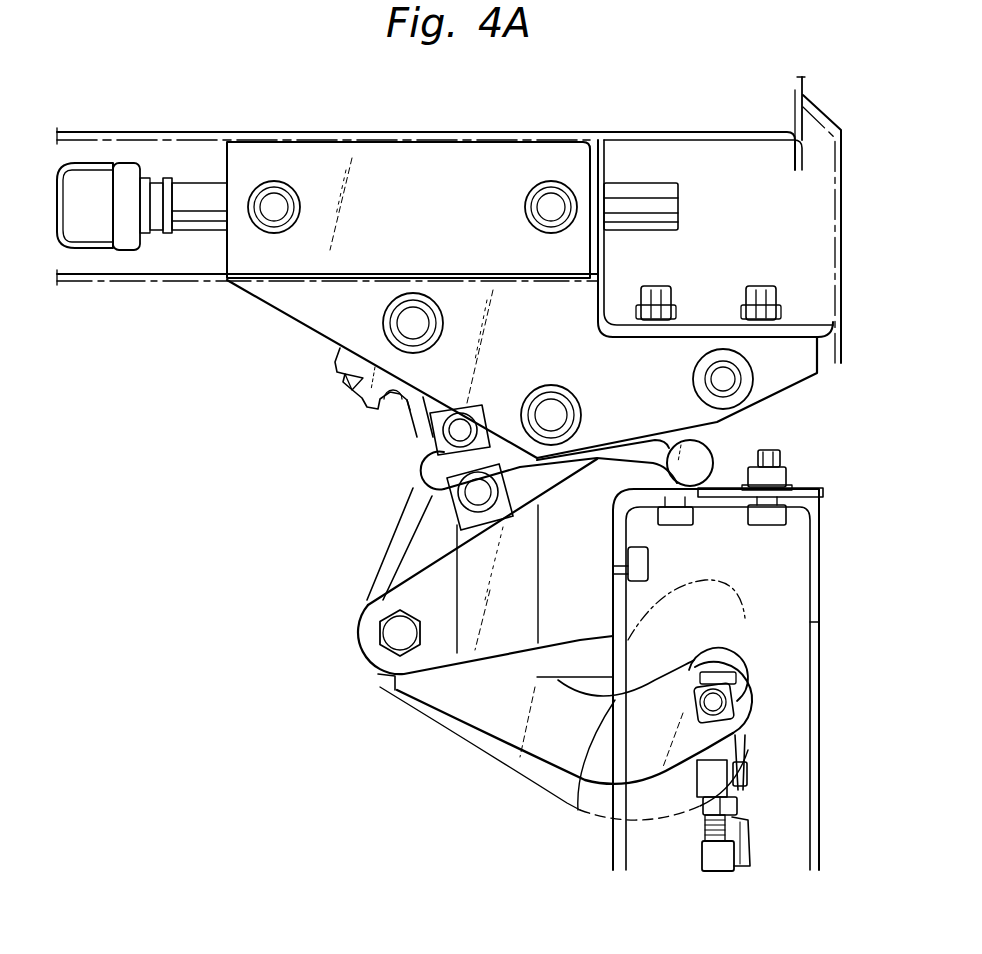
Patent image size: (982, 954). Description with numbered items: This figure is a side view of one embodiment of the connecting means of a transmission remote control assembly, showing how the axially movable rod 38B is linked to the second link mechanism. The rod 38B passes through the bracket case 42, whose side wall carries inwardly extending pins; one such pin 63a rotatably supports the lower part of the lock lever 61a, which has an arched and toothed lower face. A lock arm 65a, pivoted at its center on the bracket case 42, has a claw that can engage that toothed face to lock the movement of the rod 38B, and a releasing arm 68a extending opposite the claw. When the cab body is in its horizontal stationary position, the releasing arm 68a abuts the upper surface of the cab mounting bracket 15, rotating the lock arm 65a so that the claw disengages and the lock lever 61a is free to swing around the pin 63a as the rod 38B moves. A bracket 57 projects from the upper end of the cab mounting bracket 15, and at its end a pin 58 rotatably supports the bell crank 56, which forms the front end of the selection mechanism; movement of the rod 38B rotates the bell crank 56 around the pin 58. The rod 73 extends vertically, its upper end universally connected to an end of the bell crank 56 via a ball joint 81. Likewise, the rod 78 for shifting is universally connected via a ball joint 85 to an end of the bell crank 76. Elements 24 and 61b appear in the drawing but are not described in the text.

The rod 38B is at (197, 182).
The bracket case 42 is at (451, 153).
The frame member 24 is at (663, 133).
The pin 63a is at (385, 320).
The lock lever 61a is at (345, 380).
The latch pin 61b is at (382, 409).
The lock arm 65a is at (416, 470).
The releasing arm 68a is at (700, 457).
The cab mounting bracket 15 is at (820, 518).
The pin 58 is at (384, 636).
The bracket 57 is at (457, 653).
The bell crank 56 is at (512, 744).
The bell crank 76 is at (572, 809).
The ball joint 81 is at (741, 733).
The ball joint 85 is at (748, 772).
The rod 73 is at (703, 864).
The rod 78 is at (754, 868).